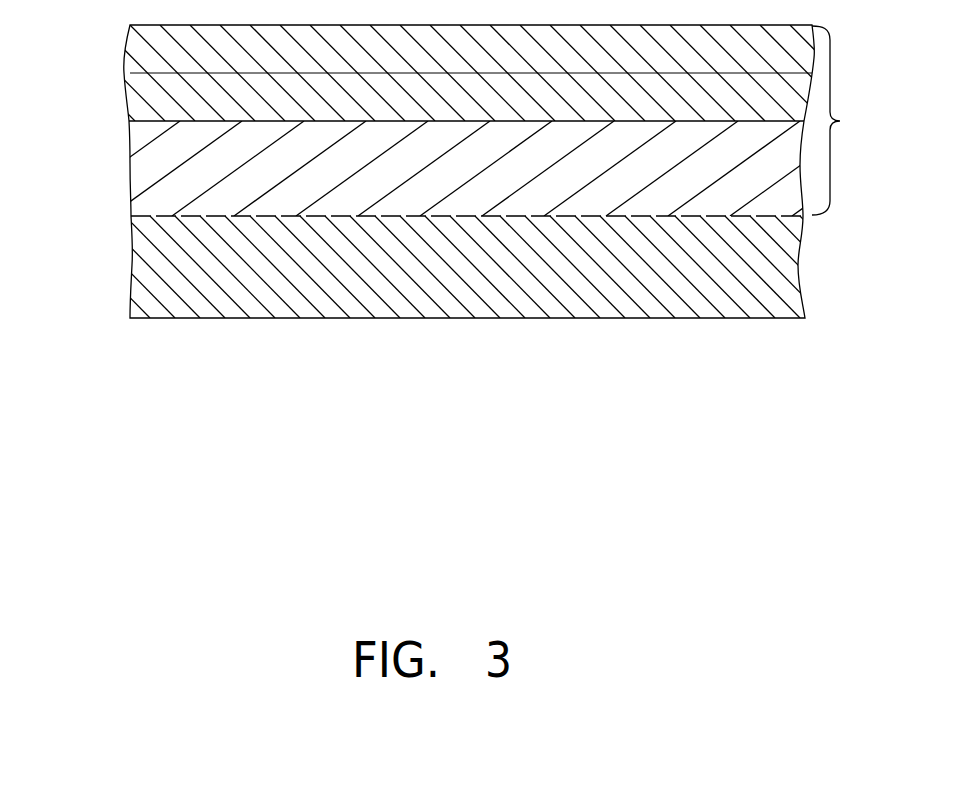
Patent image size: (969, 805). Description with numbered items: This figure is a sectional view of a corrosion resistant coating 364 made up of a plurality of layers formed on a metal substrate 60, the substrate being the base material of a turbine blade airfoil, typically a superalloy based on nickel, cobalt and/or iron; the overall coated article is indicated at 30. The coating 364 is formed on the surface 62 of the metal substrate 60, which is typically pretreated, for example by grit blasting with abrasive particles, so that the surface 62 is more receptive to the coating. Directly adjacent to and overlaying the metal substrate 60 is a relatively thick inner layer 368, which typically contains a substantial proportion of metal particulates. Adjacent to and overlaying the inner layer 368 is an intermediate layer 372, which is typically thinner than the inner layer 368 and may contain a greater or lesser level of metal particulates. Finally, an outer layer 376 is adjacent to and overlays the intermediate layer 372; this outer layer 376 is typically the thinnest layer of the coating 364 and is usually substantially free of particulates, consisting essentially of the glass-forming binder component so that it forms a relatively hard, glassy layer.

The layered article 30 is at (211, 331).
The metal substrate 60 is at (132, 265).
The surface 62 is at (776, 227).
The inner layer 368 is at (148, 163).
The intermediate layer 372 is at (138, 102).
The outer layer 376 is at (147, 60).
The corrosion resistant coating 364 is at (854, 120).